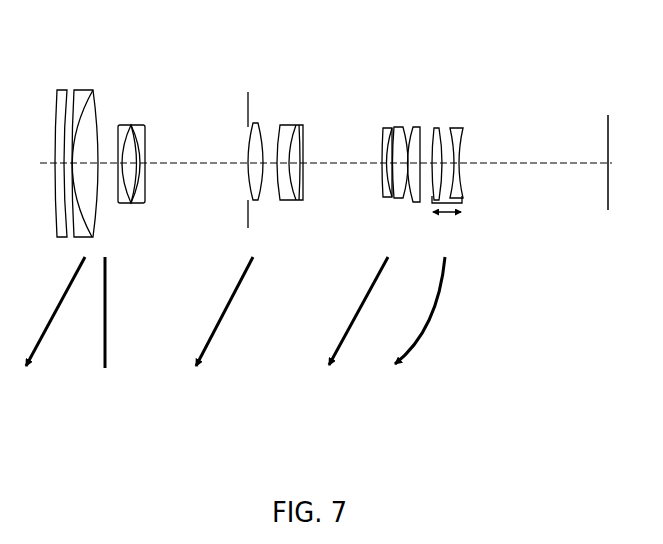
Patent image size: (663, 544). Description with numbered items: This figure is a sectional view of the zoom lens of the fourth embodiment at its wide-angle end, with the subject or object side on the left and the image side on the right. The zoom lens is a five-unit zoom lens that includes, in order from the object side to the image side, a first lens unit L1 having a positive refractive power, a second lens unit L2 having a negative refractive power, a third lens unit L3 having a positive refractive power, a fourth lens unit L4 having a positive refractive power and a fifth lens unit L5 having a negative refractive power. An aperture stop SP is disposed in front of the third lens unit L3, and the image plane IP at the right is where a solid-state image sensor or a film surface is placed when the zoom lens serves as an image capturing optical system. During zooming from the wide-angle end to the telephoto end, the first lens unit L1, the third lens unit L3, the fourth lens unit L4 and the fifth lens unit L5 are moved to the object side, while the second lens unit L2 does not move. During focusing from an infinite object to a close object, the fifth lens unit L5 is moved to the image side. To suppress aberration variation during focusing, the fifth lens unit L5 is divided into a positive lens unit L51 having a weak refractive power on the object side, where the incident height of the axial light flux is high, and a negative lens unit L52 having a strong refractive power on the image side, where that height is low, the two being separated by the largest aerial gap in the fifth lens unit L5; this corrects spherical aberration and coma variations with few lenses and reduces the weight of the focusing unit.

The first lens unit L1 is at (103, 66).
The second lens unit L2 is at (148, 66).
The third lens unit L3 is at (313, 66).
The fourth lens unit L4 is at (427, 66).
The fifth lens unit L5 is at (438, 135).
The 5-1st lens unit L51 is at (438, 123).
The 5-2nd lens unit L52 is at (461, 123).
The aperture stop SP is at (235, 100).
The image plane IP is at (605, 121).